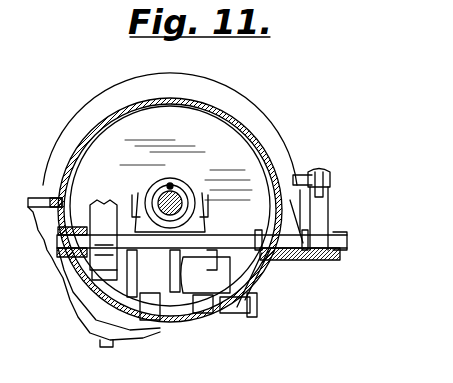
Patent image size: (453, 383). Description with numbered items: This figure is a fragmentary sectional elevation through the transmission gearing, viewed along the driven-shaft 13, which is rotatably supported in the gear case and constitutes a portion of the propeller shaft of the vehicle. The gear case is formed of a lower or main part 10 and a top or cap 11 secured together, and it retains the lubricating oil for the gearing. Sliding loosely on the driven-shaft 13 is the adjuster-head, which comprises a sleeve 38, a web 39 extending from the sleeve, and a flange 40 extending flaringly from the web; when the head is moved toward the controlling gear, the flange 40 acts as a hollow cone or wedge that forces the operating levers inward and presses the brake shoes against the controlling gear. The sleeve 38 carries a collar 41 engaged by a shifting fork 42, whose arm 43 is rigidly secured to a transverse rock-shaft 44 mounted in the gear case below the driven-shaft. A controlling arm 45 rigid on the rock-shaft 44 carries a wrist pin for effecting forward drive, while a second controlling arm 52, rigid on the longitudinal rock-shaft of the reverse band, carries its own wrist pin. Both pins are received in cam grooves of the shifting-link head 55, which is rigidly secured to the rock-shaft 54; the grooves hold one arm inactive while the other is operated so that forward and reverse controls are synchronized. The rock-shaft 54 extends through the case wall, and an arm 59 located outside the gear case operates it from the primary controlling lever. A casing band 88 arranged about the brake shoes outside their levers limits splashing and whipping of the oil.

The lower or main part of gear case 10 is at (214, 321).
The top or cap of gear case 11 is at (88, 128).
The driven-shaft 13 is at (157, 185).
The sleeve 38 is at (175, 184).
The web 39 is at (222, 145).
The flange 40 is at (267, 152).
The collar 41 is at (190, 188).
The shifting fork 42 is at (138, 190).
The arm of shifting fork 43 is at (175, 285).
The rock-shaft 44 is at (210, 307).
The controlling arm 45 is at (150, 290).
The controlling arm 52 is at (90, 298).
The rock-shaft 54 is at (257, 278).
The head of shifting-link 55 is at (60, 187).
The arm 59 is at (323, 212).
The casing band 88 is at (263, 293).